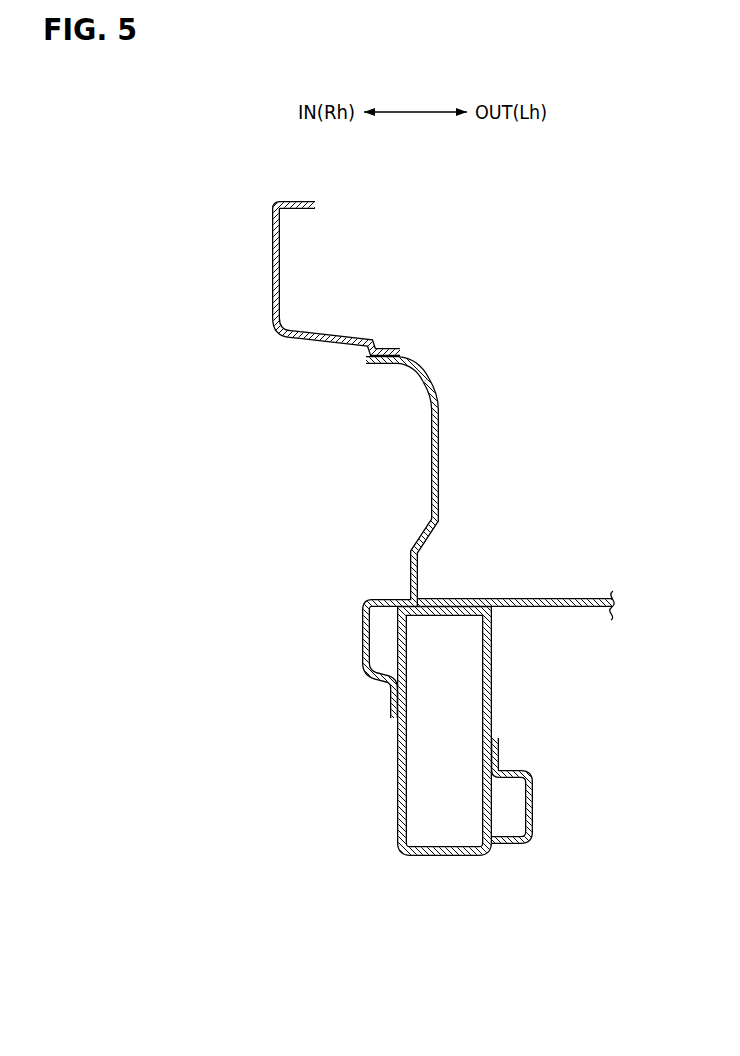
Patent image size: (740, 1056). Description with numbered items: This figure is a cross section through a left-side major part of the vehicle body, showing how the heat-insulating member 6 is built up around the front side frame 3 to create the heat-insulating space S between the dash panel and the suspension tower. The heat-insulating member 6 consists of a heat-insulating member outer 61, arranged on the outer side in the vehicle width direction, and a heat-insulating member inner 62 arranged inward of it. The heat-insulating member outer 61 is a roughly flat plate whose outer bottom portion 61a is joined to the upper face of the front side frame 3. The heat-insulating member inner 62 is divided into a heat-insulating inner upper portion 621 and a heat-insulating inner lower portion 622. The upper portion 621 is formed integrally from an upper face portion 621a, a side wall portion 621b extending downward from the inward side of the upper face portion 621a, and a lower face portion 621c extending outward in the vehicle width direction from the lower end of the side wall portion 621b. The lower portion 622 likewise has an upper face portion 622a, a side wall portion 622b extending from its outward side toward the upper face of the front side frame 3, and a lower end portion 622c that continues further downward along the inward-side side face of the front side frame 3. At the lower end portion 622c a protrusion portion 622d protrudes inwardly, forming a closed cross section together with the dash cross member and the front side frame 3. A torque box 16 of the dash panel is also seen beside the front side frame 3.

The front side frame 3 is at (396, 812).
The torque box 16 is at (534, 805).
The heat-insulating member 6 is at (411, 449).
The heat-insulating member outer 61 is at (530, 580).
The outer bottom portion 61a is at (548, 609).
The heat-insulating member inner 62 is at (355, 449).
The heat-insulating inner upper portion 621 is at (305, 271).
The upper face portion 621a is at (305, 211).
The side wall portion 621b is at (271, 262).
The lower face portion 621c is at (326, 346).
The heat-insulating inner lower portion 622 is at (406, 485).
The upper face portion 622a is at (376, 365).
The side wall portion 622b is at (440, 452).
The lower end portion 622c is at (390, 705).
The protrusion portion 622d is at (380, 655).
The heat-insulating space S is at (572, 422).